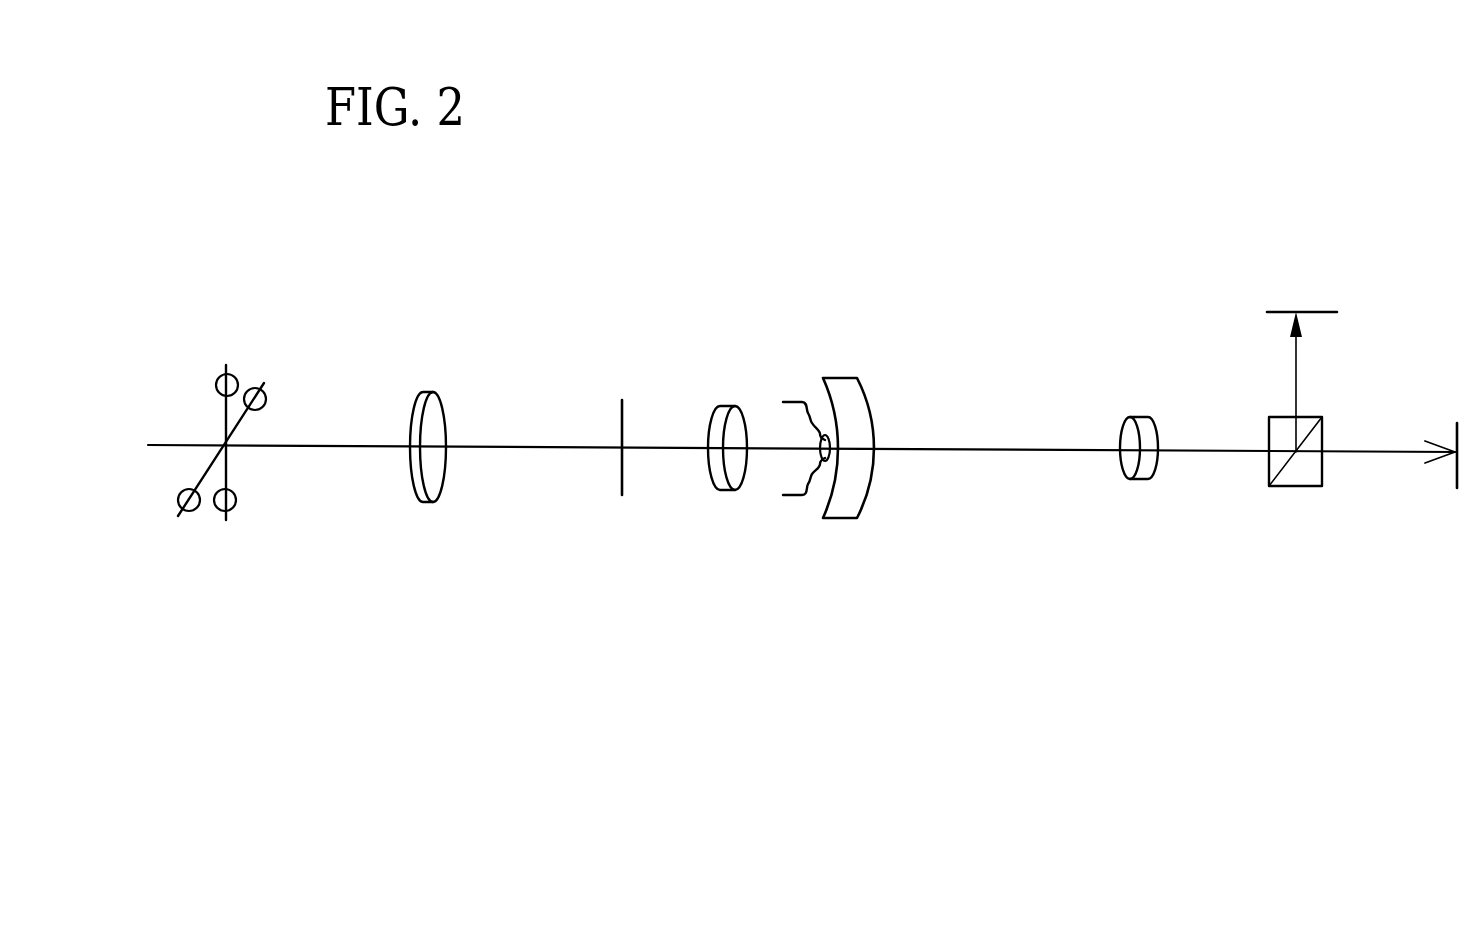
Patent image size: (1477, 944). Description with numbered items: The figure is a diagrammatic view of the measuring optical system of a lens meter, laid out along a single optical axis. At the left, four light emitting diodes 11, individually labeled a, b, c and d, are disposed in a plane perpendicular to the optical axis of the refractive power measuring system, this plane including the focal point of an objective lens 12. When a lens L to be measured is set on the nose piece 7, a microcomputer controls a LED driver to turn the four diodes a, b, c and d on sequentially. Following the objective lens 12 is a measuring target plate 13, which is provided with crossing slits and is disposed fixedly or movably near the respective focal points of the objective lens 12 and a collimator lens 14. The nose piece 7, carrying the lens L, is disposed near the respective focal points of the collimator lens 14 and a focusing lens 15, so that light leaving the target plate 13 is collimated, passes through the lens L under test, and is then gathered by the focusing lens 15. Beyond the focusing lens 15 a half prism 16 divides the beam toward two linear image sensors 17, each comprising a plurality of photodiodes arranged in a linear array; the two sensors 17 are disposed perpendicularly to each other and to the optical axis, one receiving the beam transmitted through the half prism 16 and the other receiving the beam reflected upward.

The light emitting diodes 11 is at (231, 504).
The light emitting diode a is at (232, 378).
The light emitting diode b is at (267, 398).
The light emitting diode c is at (234, 508).
The light emitting diode d is at (181, 507).
The objective lens 12 is at (433, 502).
The measuring target plate 13 is at (620, 472).
The collimator lens 14 is at (722, 490).
The nose piece 7 is at (790, 487).
The lens L is at (842, 510).
The focusing lens 15 is at (1140, 478).
The half prism 16 is at (1292, 477).
The linear image sensors 17 is at (1318, 313).